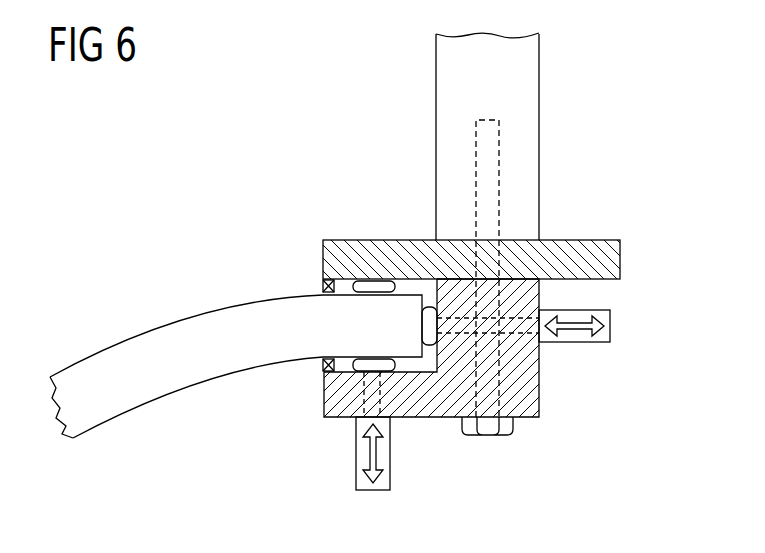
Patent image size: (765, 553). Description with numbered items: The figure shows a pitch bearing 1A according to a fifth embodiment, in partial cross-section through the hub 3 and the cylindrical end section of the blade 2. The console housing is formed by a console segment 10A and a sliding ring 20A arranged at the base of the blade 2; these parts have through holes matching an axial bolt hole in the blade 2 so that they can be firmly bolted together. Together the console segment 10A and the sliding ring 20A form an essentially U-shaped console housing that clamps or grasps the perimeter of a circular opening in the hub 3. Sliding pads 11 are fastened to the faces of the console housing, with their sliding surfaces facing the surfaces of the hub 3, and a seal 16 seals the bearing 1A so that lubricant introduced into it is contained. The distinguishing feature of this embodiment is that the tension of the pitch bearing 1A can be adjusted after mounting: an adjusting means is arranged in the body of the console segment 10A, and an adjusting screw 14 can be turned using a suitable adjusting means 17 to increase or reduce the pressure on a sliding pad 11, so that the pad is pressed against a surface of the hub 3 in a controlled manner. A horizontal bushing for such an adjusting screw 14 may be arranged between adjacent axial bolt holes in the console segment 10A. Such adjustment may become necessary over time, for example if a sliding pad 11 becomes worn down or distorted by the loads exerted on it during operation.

The pitch bearing 1A is at (592, 82).
The blade 2 is at (457, 63).
The hub 3 is at (93, 368).
The console segment 10A is at (530, 400).
The sliding pad 11 is at (372, 287).
The adjusting screw 14 is at (517, 330).
The seal 16 is at (322, 286).
The adjusting means 17 is at (603, 342).
The sliding ring 20A is at (591, 240).